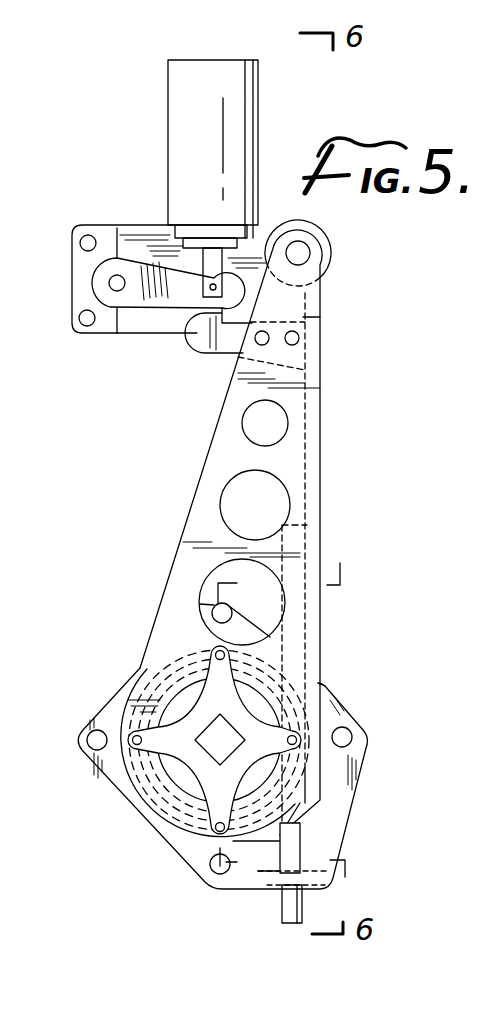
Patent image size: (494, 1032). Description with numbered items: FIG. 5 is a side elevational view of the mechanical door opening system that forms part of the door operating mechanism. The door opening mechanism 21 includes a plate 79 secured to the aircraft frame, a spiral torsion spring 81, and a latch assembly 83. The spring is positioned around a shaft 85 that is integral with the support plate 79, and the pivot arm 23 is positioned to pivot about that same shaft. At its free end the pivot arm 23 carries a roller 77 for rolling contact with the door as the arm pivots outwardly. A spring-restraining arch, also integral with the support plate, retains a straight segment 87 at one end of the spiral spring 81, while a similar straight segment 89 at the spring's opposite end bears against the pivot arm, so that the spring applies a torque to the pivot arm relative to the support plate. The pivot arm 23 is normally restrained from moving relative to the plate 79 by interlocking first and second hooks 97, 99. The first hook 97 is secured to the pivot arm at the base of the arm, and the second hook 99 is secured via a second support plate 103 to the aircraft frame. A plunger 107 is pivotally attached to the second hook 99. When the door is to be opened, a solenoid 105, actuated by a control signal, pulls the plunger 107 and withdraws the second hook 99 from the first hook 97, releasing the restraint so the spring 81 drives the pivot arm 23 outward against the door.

The door opening mechanism 21 is at (322, 500).
The pivot arm 23 is at (318, 625).
The roller 77 is at (320, 233).
The plate 79 is at (355, 722).
The spiral torsion spring 81 is at (183, 660).
The latch assembly 83 is at (168, 217).
The shaft 85 is at (320, 899).
The straight segment 87 is at (282, 897).
The straight segment 89 is at (317, 532).
The first hook 97 is at (232, 340).
The second hook 99 is at (178, 292).
The second support plate 103 is at (73, 260).
The solenoid 105 is at (262, 124).
The plunger 107 is at (215, 268).